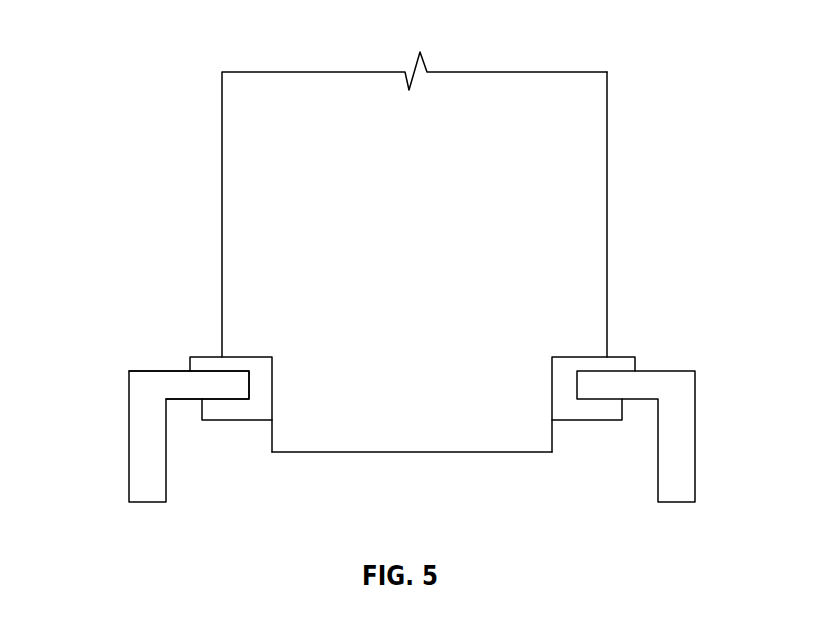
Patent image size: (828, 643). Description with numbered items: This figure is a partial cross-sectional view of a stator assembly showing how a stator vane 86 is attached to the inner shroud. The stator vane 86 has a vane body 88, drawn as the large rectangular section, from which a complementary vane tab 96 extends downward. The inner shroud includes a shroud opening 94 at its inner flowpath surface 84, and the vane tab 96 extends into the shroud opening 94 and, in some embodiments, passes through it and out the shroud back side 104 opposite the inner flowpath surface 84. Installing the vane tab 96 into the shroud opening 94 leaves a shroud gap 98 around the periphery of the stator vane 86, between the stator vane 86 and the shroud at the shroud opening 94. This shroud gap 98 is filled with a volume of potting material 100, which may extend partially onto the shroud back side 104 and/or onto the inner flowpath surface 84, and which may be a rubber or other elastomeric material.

The inner flowpath surface 84 is at (165, 368).
The stator vane 86 is at (598, 178).
The vane body 88 is at (432, 256).
The shroud opening 94 is at (567, 437).
The vane tab 96 is at (398, 440).
The shroud gap 98 is at (263, 378).
The potting material 100 is at (252, 418).
The shroud back side 104 is at (175, 394).